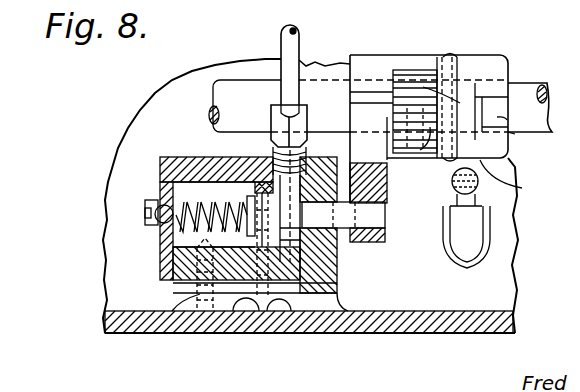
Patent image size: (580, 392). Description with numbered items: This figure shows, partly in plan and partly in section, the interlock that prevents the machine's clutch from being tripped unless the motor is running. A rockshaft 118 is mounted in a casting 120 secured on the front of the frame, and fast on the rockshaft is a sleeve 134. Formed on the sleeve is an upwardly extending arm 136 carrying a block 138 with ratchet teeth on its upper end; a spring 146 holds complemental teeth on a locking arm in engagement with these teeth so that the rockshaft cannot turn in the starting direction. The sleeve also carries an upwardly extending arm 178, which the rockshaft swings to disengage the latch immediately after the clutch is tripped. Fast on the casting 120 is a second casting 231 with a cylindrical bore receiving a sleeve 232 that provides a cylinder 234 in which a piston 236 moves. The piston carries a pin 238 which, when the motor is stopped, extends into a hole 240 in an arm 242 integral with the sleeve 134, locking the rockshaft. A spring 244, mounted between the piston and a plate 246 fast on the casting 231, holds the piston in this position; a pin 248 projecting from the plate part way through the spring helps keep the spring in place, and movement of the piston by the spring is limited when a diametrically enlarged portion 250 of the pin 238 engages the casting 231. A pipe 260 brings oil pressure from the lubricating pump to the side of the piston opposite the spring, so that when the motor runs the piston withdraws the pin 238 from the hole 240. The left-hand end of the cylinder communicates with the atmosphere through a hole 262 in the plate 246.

The rockshaft 118 is at (528, 88).
The casting 120 is at (369, 331).
The sleeve 134 is at (400, 48).
The arm 136 is at (432, 152).
The block 138 is at (432, 72).
The spring 146 is at (522, 191).
The arm 178 is at (510, 135).
The casting 231 is at (246, 284).
The sleeve 232 is at (185, 174).
The cylinder 234 is at (275, 298).
The piston 236 is at (264, 262).
The pin 238 is at (370, 236).
The hole 240 is at (373, 215).
The arm 242 is at (383, 194).
The spring 244 is at (205, 230).
The plate 246 is at (160, 164).
The pin 248 is at (176, 240).
The diametrically enlarged portion 250 is at (330, 245).
The pipe 260 is at (296, 37).
The hole 262 is at (158, 190).